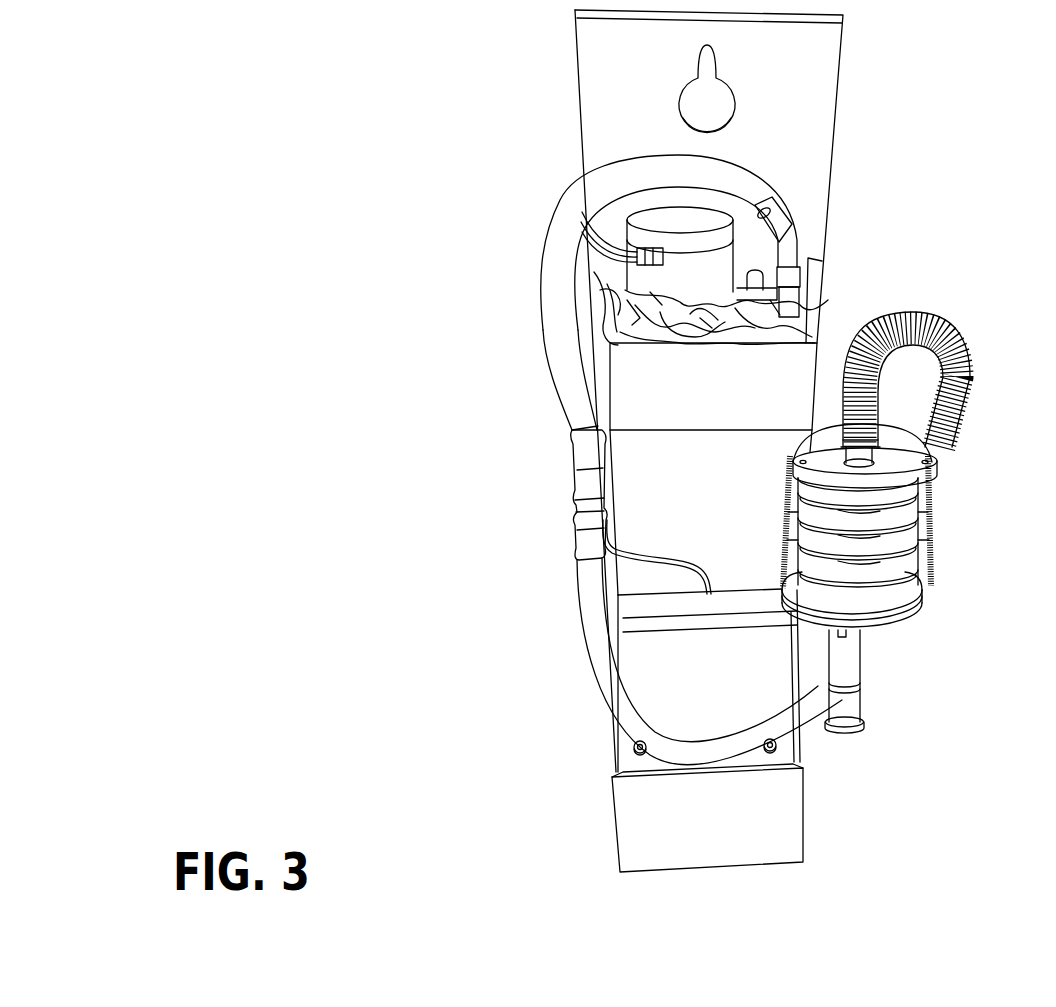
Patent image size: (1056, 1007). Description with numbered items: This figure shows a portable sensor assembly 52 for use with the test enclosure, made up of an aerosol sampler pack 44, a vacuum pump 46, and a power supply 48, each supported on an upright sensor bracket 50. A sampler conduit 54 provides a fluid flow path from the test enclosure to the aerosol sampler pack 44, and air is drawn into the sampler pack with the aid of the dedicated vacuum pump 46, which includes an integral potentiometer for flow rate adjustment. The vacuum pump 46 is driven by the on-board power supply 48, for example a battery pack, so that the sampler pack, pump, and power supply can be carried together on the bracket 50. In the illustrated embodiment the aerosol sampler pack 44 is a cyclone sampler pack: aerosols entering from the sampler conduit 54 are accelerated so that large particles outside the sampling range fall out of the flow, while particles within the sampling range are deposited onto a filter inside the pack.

The sensor assembly 52 is at (488, 112).
The upright sensor bracket 50 is at (801, 102).
The vacuum pump 46 is at (698, 222).
The aerosol sampler pack 44 is at (922, 588).
The power supply 48 is at (740, 681).
The sampler conduit 54 is at (577, 615).